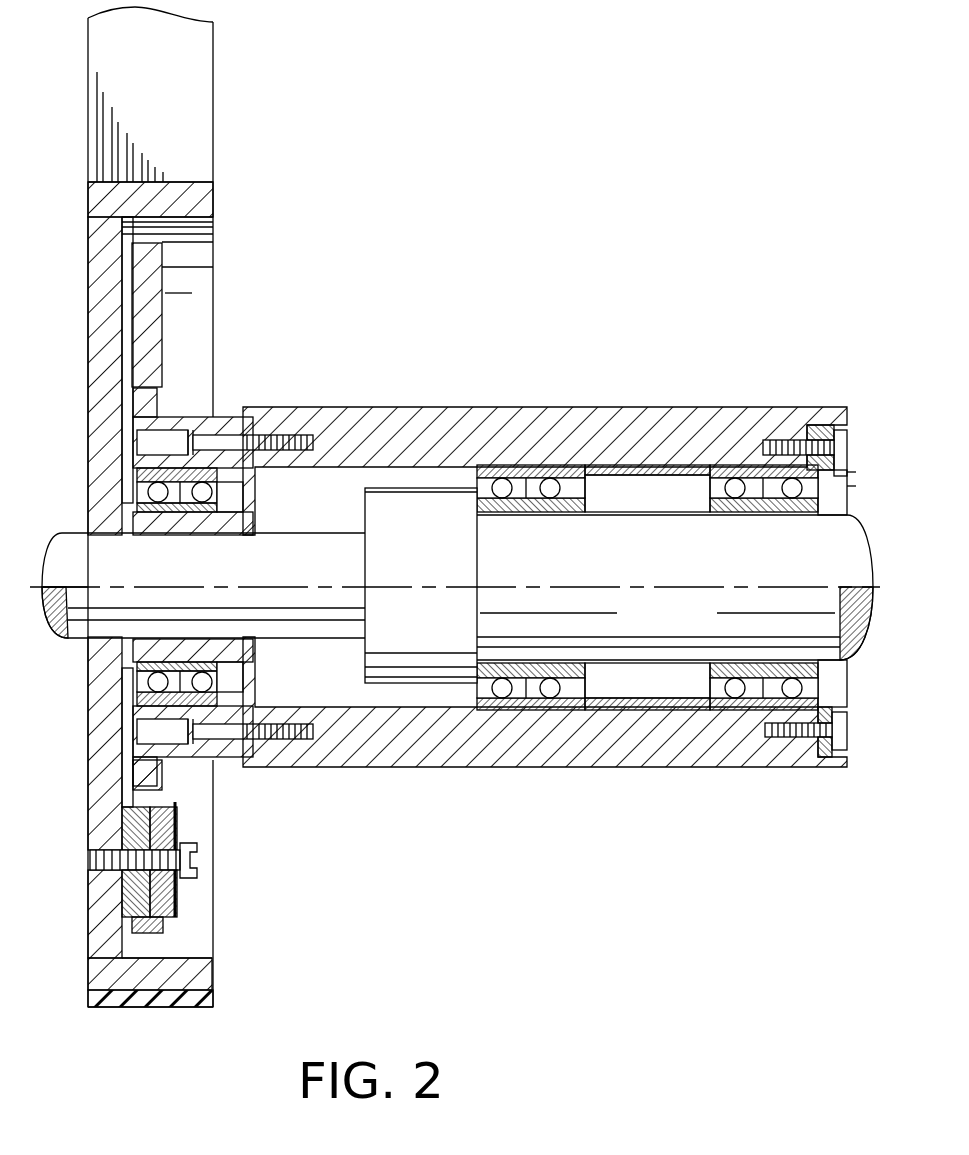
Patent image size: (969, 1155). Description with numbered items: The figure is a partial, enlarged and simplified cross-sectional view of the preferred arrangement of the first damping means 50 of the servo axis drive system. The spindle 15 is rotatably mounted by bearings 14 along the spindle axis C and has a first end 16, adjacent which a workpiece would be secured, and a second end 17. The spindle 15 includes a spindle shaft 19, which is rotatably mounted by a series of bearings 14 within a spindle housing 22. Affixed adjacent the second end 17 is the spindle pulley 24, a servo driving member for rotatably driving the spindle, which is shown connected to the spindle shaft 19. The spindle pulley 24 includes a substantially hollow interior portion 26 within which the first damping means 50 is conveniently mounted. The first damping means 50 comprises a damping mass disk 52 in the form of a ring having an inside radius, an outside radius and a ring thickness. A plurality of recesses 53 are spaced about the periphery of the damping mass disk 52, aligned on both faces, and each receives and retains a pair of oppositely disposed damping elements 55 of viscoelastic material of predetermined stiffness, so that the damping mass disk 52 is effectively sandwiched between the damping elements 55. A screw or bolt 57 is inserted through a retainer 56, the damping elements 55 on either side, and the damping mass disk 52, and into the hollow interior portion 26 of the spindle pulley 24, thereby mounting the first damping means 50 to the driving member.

The bearings 14 is at (705, 506).
The spindle 15 is at (585, 340).
The first end 16 is at (862, 458).
The second end 17 is at (52, 655).
The spindle shaft 19 is at (297, 553).
The spindle housing 22 is at (423, 425).
The spindle pulley 24 is at (92, 286).
The hollow interior portion 26 is at (195, 237).
The first damping means 50 is at (172, 885).
The damping mass disk 52 is at (152, 307).
The recesses 53 is at (182, 887).
The damping elements 55 is at (178, 905).
The retainer 56 is at (177, 821).
The screw or bolt 57 is at (197, 848).
The spindle axis C is at (574, 587).